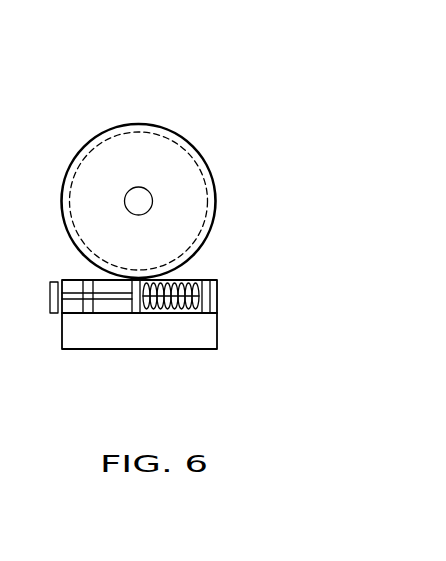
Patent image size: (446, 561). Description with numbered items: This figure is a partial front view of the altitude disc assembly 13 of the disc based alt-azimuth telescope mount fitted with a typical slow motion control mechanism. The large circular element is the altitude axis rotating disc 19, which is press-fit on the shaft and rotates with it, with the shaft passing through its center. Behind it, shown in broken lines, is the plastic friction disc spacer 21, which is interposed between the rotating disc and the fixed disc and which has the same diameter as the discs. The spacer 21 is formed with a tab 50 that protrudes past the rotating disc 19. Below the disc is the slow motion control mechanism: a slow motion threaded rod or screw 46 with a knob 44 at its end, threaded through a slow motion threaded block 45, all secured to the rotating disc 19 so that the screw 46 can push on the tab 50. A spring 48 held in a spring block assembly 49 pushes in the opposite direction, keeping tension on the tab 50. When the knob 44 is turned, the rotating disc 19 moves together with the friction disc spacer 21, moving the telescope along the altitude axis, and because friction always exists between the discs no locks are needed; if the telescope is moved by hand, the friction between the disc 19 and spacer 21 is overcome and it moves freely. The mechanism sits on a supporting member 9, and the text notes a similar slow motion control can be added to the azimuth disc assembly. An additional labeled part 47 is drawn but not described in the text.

The altitude disc assembly 13 is at (103, 94).
The altitude axis rotating disc 19 is at (208, 160).
The friction disc spacer 21 is at (97, 163).
The tab 50 is at (212, 207).
The azimuth axis fixed disc 9 is at (197, 350).
The knob 44 is at (58, 312).
The slow motion threaded block 45 is at (88, 313).
The slow motion threaded rod or screw 46 is at (116, 300).
The slider block 47 is at (137, 305).
The spring 48 is at (182, 305).
The spring block assembly 49 is at (205, 280).